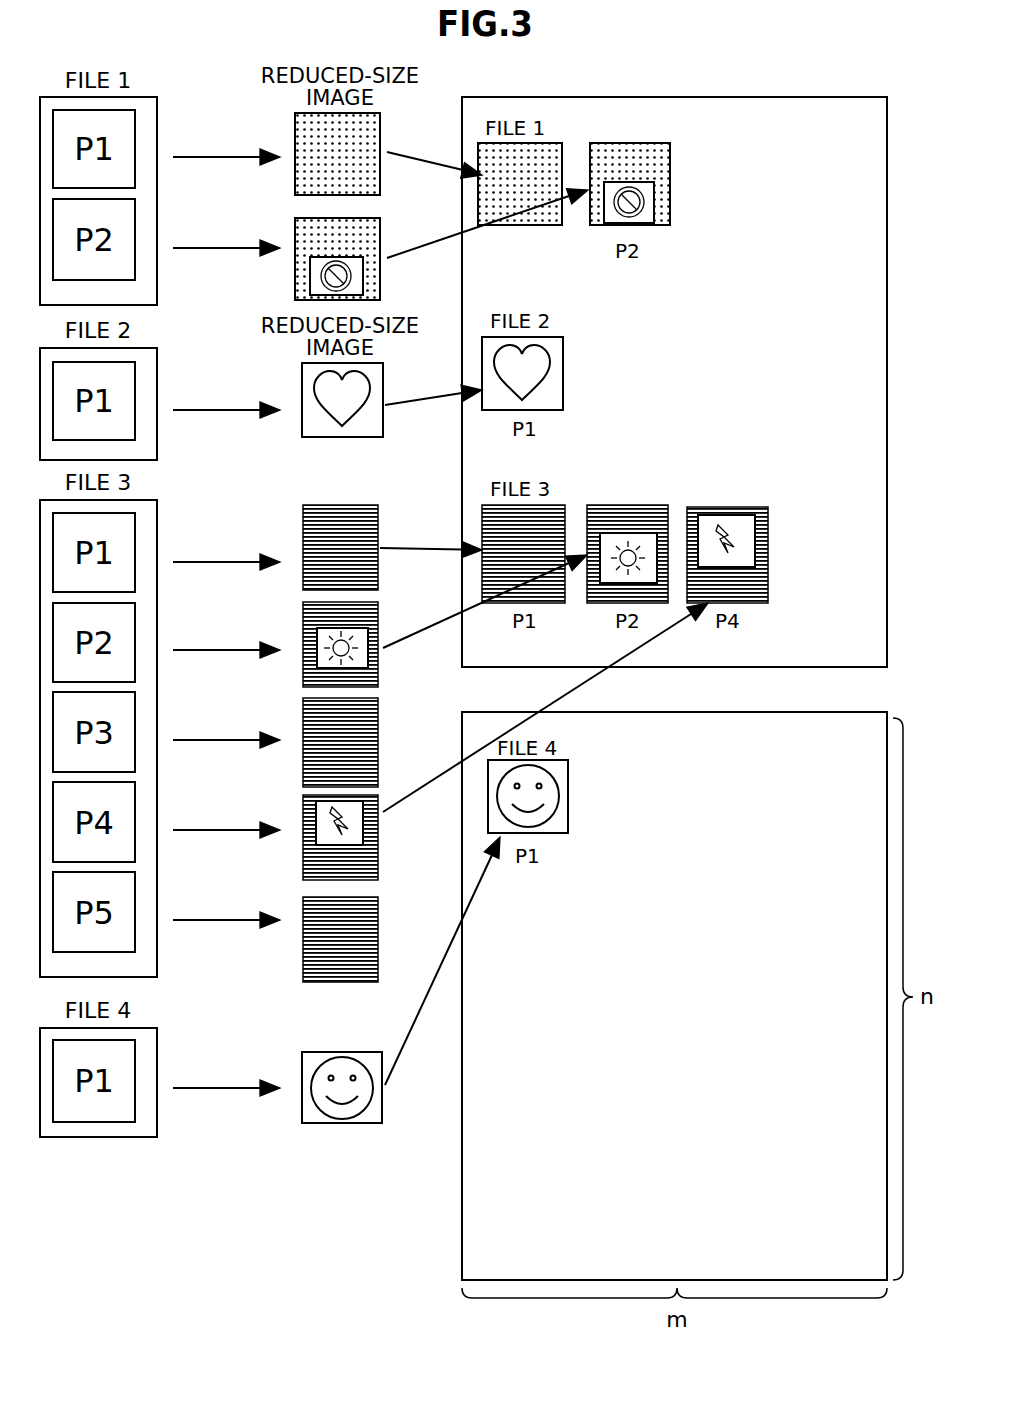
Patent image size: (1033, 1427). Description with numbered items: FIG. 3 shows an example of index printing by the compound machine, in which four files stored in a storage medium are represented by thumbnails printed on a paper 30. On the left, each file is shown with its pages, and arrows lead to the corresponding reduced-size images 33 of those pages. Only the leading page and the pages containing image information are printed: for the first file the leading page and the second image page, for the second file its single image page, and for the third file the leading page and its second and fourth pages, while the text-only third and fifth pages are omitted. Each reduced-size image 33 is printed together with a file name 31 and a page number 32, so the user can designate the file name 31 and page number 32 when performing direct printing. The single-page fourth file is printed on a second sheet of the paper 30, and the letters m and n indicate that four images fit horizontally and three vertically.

The paper 30 is at (852, 655).
The file name 31 is at (472, 107).
The page number 32 is at (500, 246).
The reduced-size image 33 is at (478, 152).